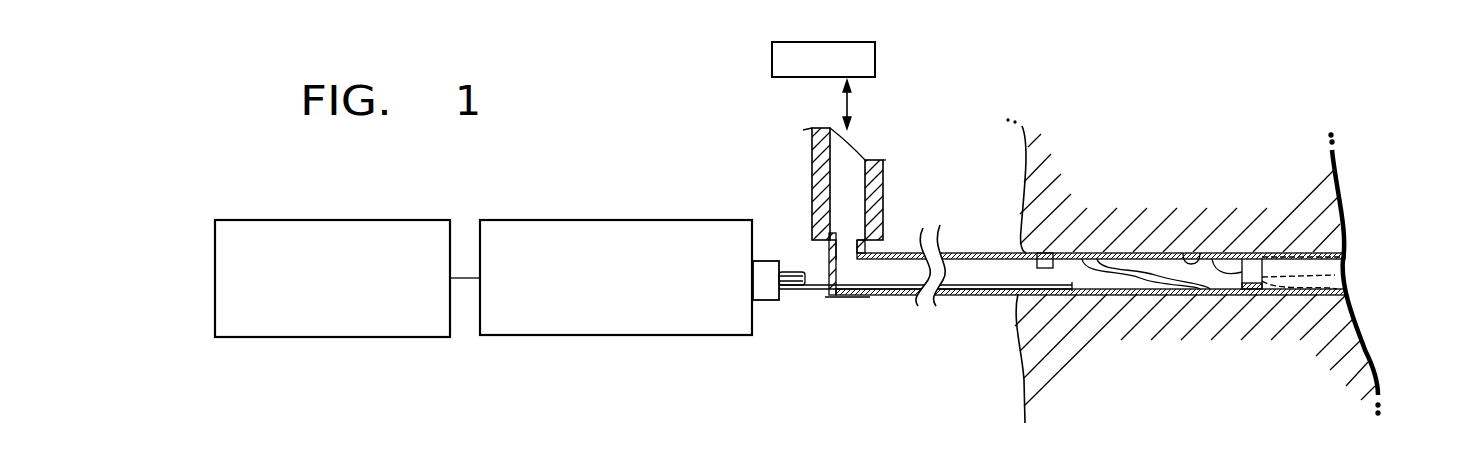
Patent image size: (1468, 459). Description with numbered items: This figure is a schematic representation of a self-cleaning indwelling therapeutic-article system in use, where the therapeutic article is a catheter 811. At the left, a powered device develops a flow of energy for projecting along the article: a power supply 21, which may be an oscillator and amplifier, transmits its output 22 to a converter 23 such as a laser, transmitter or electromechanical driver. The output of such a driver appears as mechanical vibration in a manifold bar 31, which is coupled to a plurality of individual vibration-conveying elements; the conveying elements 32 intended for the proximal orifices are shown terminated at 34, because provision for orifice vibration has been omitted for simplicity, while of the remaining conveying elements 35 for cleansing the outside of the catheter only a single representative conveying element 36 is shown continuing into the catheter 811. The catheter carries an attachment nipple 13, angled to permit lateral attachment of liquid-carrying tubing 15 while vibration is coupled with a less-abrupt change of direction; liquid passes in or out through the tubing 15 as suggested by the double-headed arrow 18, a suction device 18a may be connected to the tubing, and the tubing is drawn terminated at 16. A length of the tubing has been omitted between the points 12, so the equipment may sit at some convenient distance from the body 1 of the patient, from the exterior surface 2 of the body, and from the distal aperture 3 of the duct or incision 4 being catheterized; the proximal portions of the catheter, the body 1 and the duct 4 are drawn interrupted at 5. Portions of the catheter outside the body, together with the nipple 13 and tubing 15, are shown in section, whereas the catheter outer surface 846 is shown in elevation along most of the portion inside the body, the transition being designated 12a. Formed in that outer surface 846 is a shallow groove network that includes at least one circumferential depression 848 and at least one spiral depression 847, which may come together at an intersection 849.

The body of a patient 1 is at (1111, 185).
The exterior surface of the body 2 is at (1022, 149).
The distal aperture 3 is at (1017, 297).
The duct or incision 4 is at (1184, 253).
The interruption 5 is at (1334, 184).
The points of omitted tubing length 12 is at (1089, 296).
The transition 12a is at (1030, 271).
The attachment nipple 13 is at (880, 242).
The liquid-carrying tubing 15 is at (884, 168).
The termination of tubing 16 is at (866, 160).
The double-headed arrow 18 is at (852, 103).
The suction device 18a is at (783, 78).
The power supply 21 is at (326, 220).
The output 22 is at (462, 278).
The converter 23 is at (592, 220).
The manifold bar 31 is at (758, 261).
The conveying elements for orifices 32 is at (892, 332).
The termination of conveying elements 34 is at (799, 272).
The conveying elements 35 is at (792, 295).
The representative conveying element 36 is at (819, 296).
The catheter 811 is at (923, 232).
The catheter outer surface 846 is at (1120, 283).
The spiral depression 847 is at (1163, 277).
The circumferential depression 848 is at (1250, 255).
The intersection 849 is at (1256, 267).